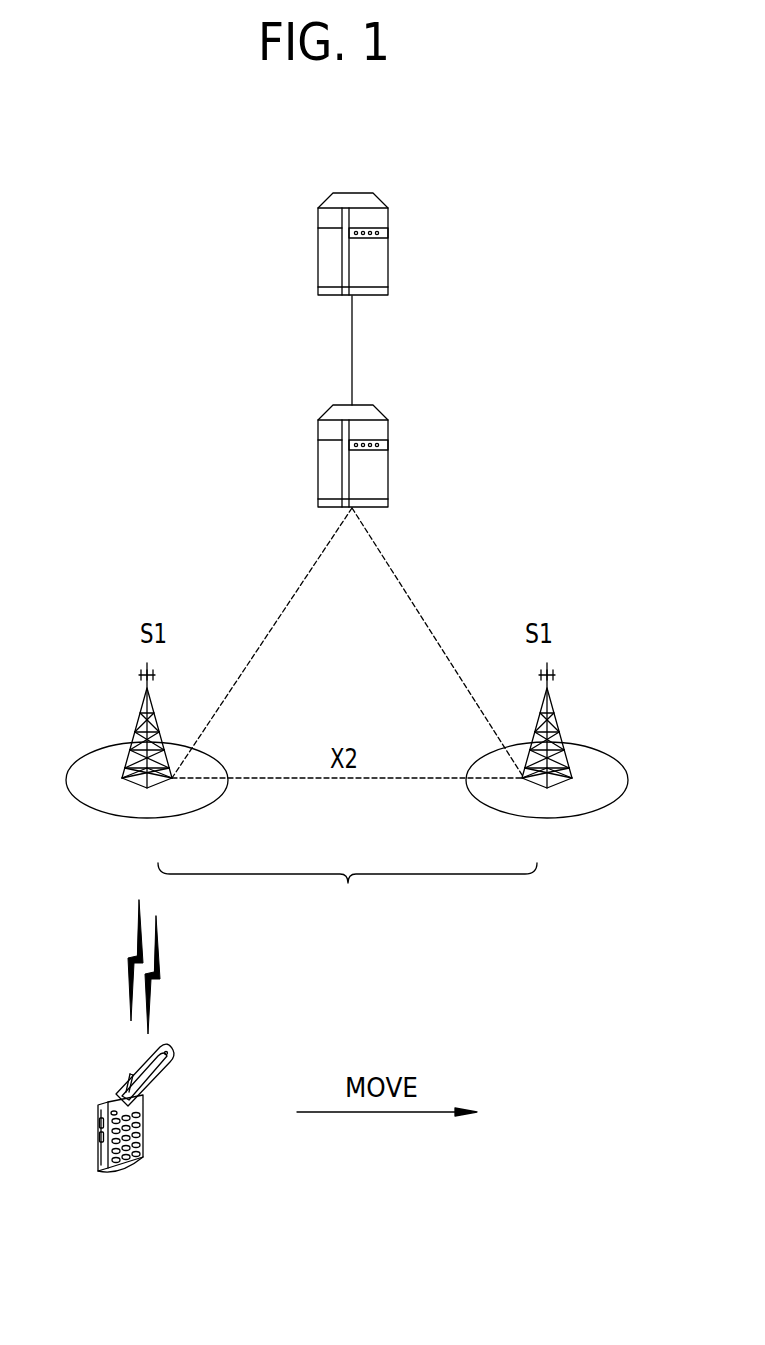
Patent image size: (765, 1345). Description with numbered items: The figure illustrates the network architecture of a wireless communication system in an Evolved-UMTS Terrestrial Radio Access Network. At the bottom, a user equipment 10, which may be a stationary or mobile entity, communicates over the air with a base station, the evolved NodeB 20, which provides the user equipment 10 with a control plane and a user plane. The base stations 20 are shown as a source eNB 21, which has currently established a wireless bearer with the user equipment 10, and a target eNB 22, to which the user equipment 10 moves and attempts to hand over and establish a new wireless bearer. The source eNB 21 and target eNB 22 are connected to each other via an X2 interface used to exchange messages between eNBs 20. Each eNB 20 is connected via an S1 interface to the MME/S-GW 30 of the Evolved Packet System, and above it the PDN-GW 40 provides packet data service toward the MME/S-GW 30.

The user equipment 10 is at (143, 1133).
The evolved NodeB 20 is at (347, 895).
The source eNB 21 is at (142, 698).
The target eNB 22 is at (552, 698).
The MME/S-GW 30 is at (388, 455).
The PDN-GW 40 is at (388, 245).